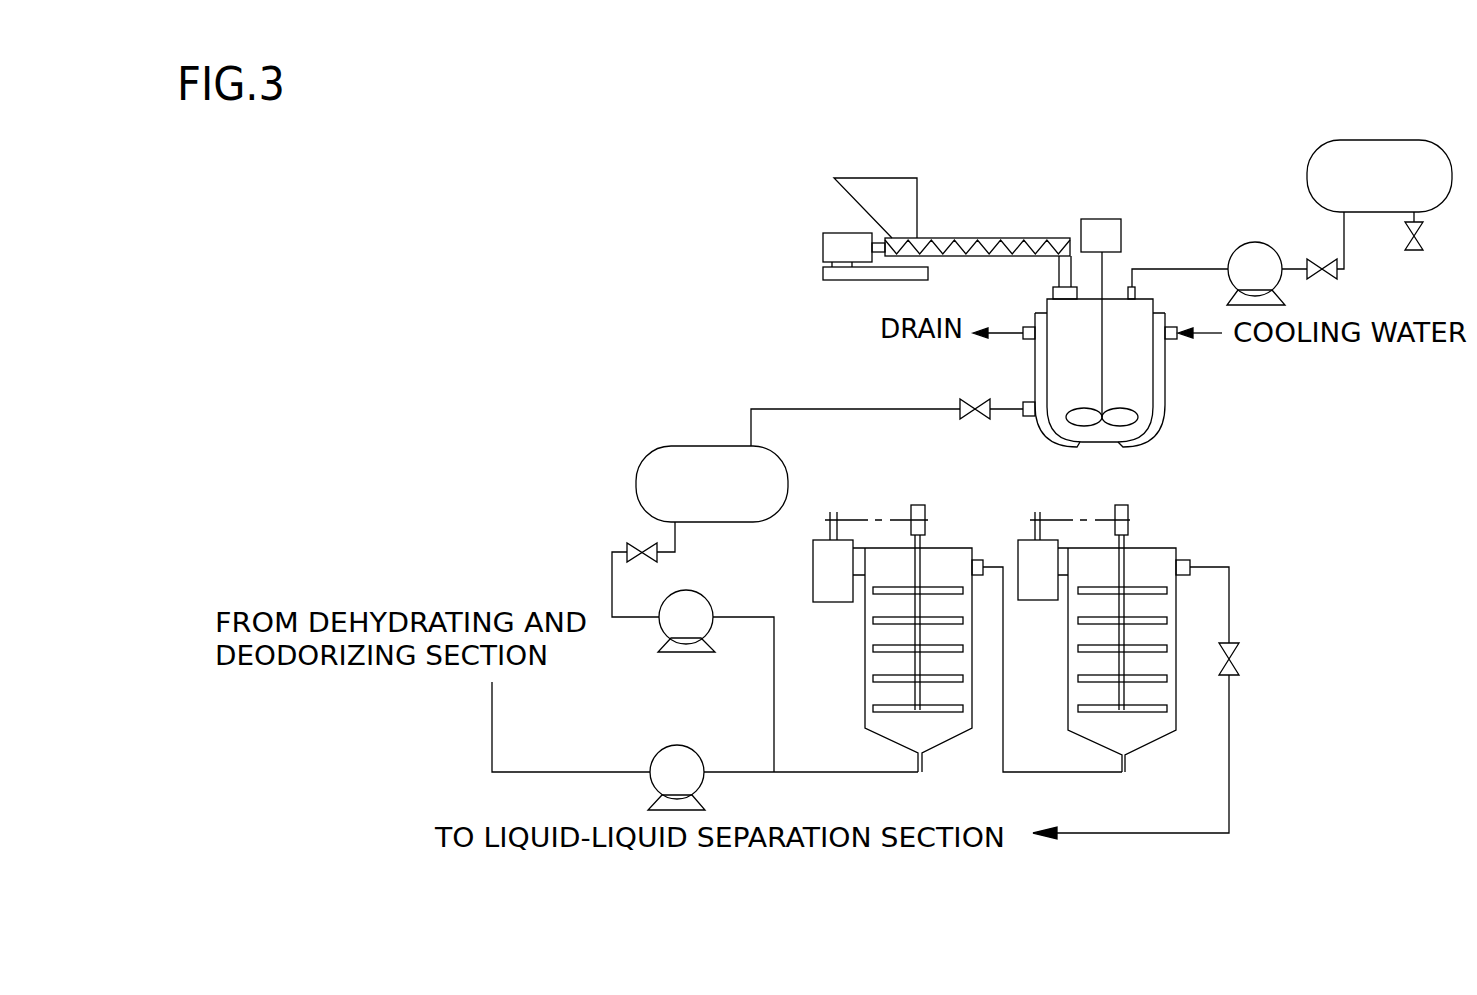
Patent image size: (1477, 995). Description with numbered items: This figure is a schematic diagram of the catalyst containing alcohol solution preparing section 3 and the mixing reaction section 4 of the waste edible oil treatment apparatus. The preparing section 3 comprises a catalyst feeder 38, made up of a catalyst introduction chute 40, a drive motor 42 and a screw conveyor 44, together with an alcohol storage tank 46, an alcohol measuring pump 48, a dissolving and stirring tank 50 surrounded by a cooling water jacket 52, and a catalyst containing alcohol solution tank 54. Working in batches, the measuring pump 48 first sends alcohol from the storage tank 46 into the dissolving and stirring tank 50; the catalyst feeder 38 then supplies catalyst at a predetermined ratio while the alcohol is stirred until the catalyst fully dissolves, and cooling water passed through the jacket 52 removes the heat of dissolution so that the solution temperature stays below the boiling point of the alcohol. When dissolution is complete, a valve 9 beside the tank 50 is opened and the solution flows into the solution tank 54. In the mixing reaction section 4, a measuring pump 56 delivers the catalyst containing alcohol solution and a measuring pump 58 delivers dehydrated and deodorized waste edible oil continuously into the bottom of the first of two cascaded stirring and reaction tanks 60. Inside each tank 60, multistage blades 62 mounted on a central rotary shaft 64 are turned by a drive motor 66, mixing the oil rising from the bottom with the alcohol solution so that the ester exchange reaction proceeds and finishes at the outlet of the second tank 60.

The catalyst containing alcohol solution preparing section 3 is at (1062, 182).
The mixing reaction section 4 is at (1243, 497).
The valve 9 is at (1420, 240).
The catalyst feeder 38 is at (955, 185).
The catalyst introduction chute 40 is at (866, 186).
The drive motor 42 is at (838, 245).
The screw conveyor 44 is at (1006, 238).
The alcohol storage tank 46 is at (1382, 158).
The alcohol measuring pump 48 is at (1257, 242).
The dissolving and stirring tank 50 is at (1057, 375).
The cooling water jacket 52 is at (1156, 384).
The catalyst containing alcohol solution tank 54 is at (684, 458).
The measuring pump for catalyst containing alcohol solution 56 is at (706, 590).
The measuring pump for dehydrated and deodorized waste edible oil 58 is at (695, 745).
The stirring and reaction tank 60 is at (865, 655).
The multistage blades 62 is at (942, 713).
The rotary shaft 64 is at (920, 560).
The drive motor 66 is at (822, 572).